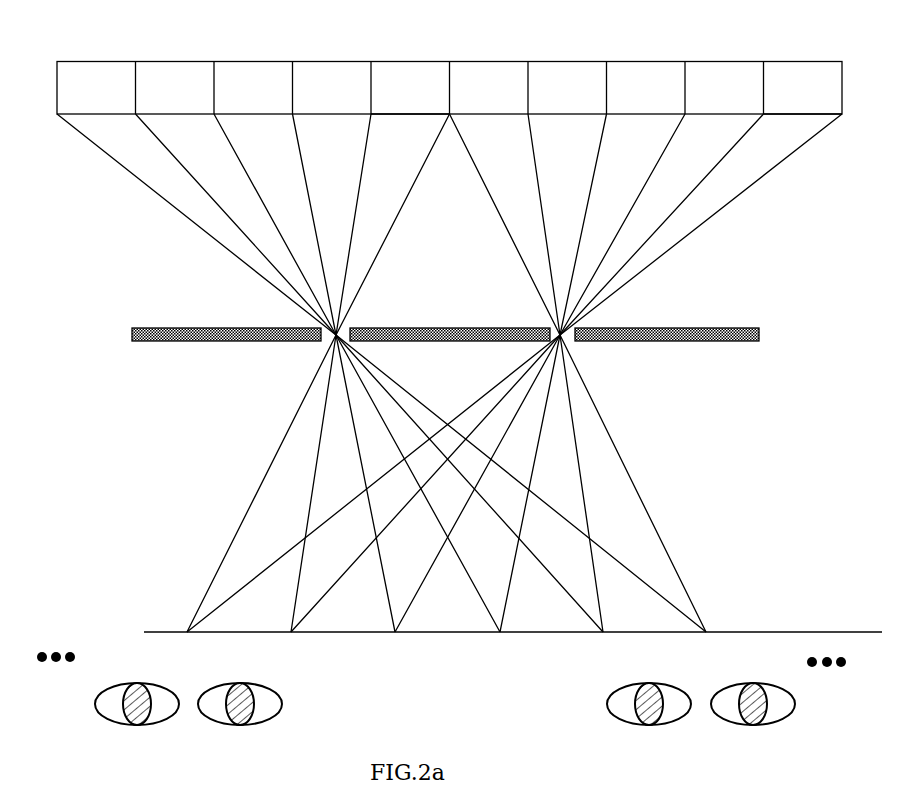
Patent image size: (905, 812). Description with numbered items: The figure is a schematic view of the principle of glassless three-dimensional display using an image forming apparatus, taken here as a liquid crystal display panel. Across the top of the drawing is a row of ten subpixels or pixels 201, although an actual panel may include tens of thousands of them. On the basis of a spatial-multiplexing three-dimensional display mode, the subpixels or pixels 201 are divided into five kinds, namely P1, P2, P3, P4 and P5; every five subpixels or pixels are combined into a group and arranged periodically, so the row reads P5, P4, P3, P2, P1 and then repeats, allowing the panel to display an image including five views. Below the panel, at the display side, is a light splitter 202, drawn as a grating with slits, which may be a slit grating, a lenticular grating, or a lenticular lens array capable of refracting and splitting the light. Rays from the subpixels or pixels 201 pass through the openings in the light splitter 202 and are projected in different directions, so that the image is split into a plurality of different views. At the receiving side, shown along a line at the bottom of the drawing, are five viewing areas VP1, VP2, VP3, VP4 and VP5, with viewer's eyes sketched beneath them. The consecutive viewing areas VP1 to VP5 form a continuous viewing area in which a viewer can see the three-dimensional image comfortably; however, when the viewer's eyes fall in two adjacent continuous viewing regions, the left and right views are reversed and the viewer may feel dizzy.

The subpixels or pixels 201 is at (449, 66).
The light splitter 202 is at (423, 328).
The first kind of subpixel or pixel P1 is at (606, 95).
The second kind of subpixel or pixel P2 is at (541, 88).
The third kind of subpixel or pixel P3 is at (462, 88).
The fourth kind of subpixel or pixel P4 is at (384, 88).
The fifth kind of subpixel or pixel P5 is at (305, 88).
The first viewing area VP1 is at (426, 421).
The second viewing area VP2 is at (489, 393).
The third viewing area VP3 is at (410, 393).
The fourth viewing area VP4 is at (370, 393).
The fifth viewing area VP5 is at (468, 421).